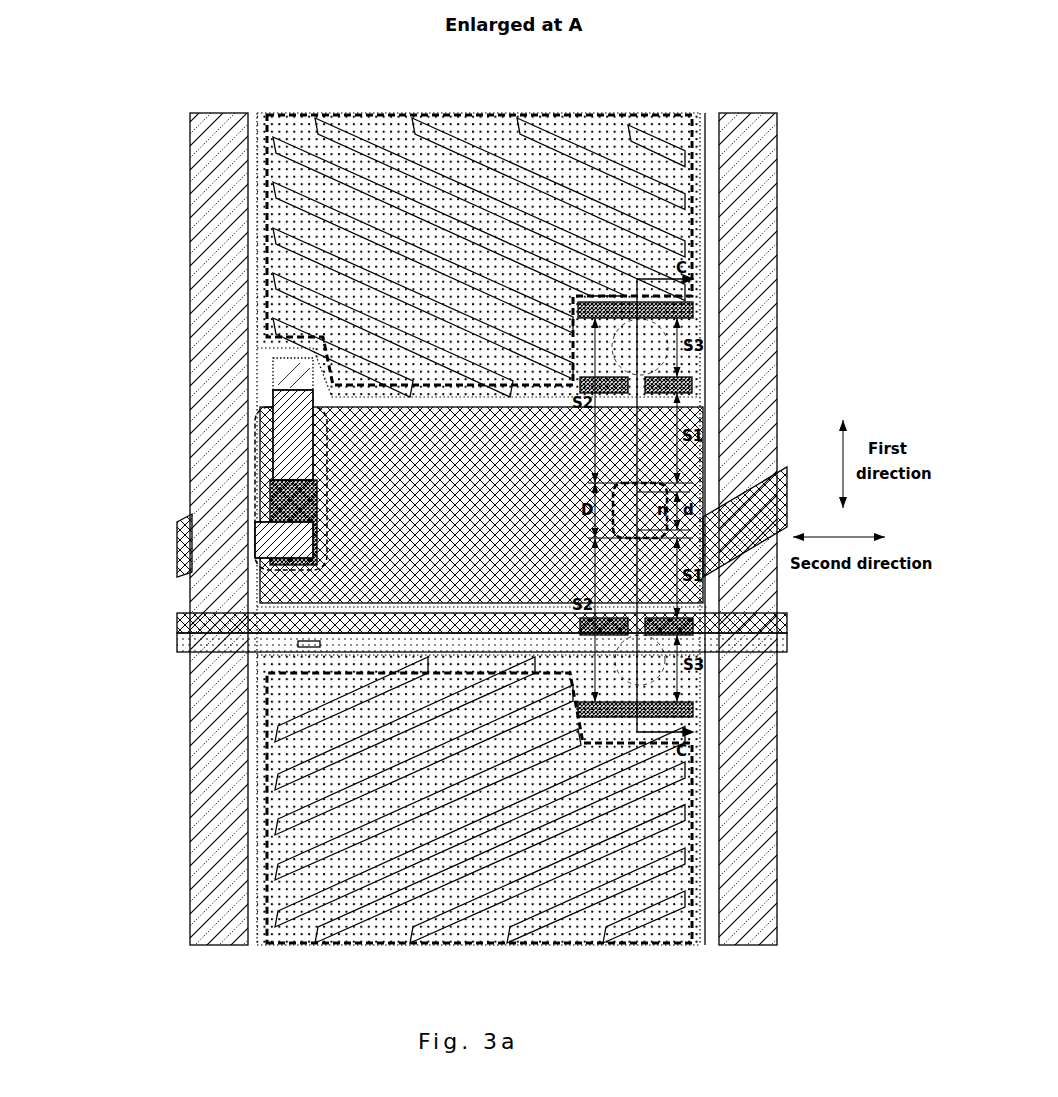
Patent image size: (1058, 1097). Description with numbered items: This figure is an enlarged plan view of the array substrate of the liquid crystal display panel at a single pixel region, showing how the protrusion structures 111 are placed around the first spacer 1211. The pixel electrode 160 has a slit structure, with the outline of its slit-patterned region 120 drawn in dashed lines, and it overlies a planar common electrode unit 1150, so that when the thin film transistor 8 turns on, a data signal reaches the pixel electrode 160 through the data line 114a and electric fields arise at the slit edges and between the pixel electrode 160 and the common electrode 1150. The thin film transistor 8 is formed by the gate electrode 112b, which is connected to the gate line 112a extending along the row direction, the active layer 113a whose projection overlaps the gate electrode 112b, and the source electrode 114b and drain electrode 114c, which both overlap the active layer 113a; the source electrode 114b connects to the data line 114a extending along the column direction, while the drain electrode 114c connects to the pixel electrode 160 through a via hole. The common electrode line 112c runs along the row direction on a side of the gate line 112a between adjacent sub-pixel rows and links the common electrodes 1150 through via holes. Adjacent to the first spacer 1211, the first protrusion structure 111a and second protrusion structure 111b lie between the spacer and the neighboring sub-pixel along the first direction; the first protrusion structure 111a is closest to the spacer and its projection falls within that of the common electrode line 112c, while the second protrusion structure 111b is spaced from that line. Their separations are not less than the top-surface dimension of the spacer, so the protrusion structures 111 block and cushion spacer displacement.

The pixel electrode 120 is at (692, 160).
The pixel electrode 160 is at (700, 152).
The common electrode unit 1150 is at (708, 225).
The protrusion structure 111 is at (747, 506).
The first protrusion structure 111a is at (700, 382).
The second protrusion structure 111b is at (700, 304).
The data line 114a is at (192, 357).
The source electrode 114b is at (315, 528).
The drain electrode 114c is at (315, 435).
The thin film transistor 8 is at (258, 462).
The gate line 112a is at (177, 550).
The gate electrode 112b is at (258, 497).
The common electrode line 112c is at (177, 634).
The active layer 113a is at (320, 480).
The first spacer 1211 is at (585, 448).